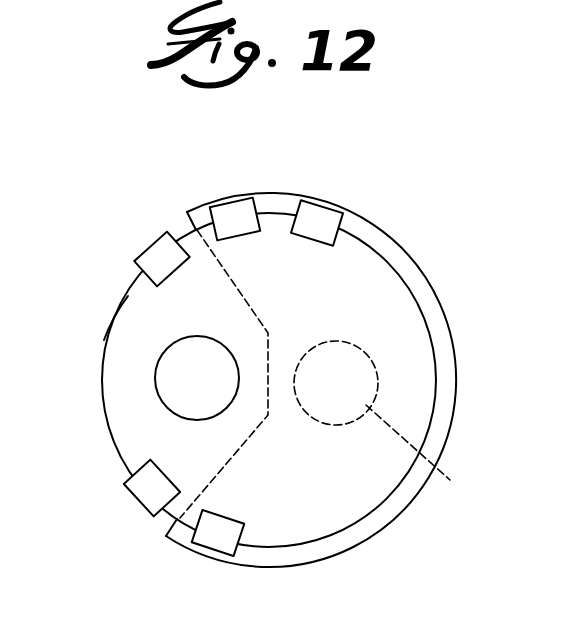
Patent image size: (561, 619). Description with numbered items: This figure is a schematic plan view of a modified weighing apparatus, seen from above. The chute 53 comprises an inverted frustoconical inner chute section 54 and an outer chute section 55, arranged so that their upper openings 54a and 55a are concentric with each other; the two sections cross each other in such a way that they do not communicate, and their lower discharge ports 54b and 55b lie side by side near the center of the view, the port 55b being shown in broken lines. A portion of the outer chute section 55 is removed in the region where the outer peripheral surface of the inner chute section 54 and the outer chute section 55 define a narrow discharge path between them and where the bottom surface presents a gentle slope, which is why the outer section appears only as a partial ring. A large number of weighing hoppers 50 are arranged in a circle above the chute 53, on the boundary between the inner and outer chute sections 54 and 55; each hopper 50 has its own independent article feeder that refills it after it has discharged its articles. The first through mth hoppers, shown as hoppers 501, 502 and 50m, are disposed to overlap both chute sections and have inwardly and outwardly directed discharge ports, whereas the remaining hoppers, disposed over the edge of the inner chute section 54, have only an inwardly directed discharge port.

The weighing hopper 50 is at (146, 248).
The first weighing hopper 501 is at (227, 202).
The second weighing hopper 502 is at (320, 207).
The mth weighing hopper 50m is at (205, 549).
The chute 53 is at (453, 296).
The inner chute section 54 is at (126, 297).
The upper opening of inner chute section 54a is at (124, 340).
The lower discharge port of inner chute section 54b is at (219, 395).
The outer chute section 55 is at (454, 398).
The upper opening of outer chute section 55a is at (404, 268).
The lower discharge port of outer chute section 55b is at (388, 429).